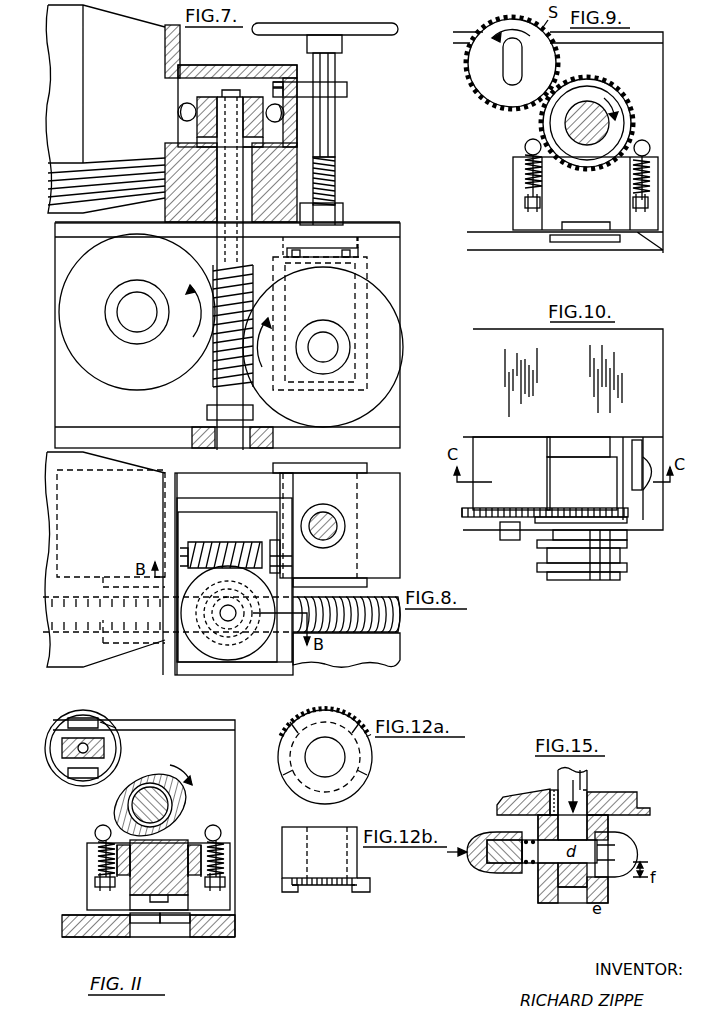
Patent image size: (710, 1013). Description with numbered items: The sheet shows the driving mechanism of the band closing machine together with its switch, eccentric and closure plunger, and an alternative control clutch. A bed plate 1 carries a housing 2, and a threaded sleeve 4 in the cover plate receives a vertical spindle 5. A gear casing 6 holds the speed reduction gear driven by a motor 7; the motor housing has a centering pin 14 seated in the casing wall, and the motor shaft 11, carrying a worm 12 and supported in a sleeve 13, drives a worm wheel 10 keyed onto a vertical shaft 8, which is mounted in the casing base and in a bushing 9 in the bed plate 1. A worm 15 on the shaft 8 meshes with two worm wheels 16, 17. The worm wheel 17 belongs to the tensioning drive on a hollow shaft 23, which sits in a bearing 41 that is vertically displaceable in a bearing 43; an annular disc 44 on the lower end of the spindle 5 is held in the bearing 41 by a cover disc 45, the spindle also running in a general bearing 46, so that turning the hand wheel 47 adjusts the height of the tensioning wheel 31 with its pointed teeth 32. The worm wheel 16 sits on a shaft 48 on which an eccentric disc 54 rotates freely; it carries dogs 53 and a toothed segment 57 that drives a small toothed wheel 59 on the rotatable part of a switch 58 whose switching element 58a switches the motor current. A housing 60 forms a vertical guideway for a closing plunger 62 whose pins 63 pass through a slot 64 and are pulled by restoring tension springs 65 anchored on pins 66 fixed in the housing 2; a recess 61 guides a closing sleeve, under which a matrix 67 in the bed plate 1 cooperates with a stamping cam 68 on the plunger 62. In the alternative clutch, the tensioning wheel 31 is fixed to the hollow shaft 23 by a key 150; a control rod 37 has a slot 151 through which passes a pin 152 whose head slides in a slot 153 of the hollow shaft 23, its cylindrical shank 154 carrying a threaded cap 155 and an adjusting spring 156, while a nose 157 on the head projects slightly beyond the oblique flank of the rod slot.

In FIG. 7, the bed plate 1 is at (387, 437).
In FIG. 7, the housing 2 is at (408, 407).
In FIG. 8, the housing 2 is at (390, 565).
In FIG. 9, the housing 2 is at (650, 88).
In FIG. 10, the housing 2 is at (648, 396).
In FIG. 11, the housing 2 is at (220, 750).
In FIG. 7, the threaded sleeve 4 is at (341, 216).
In FIG. 7, the vertical spindle 5 is at (335, 126).
In FIG. 8, the vertical spindle 5 is at (328, 512).
In FIG. 7, the gear casing 6 is at (176, 162).
In FIG. 8, the gear casing 6 is at (260, 655).
In FIG. 7, the motor 7 is at (118, 24).
In FIG. 8, the motor 7 is at (105, 559).
In FIG. 7, the vertical shaft 8 is at (233, 95).
In FIG. 7, the bushing 9 is at (207, 412).
In FIG. 7, the worm wheel 10 is at (205, 95).
In FIG. 8, the worm wheel 10 is at (228, 650).
In FIG. 7, the motor shaft 11 is at (180, 110).
In FIG. 8, the motor shaft 11 is at (184, 548).
In FIG. 8, the worm 12 is at (232, 542).
In FIG. 8, the sleeve 13 is at (276, 542).
In FIG. 7, the centering pin 14 is at (165, 122).
In FIG. 7, the worm 15 is at (213, 385).
In FIG. 7, the worm wheel 16 is at (112, 376).
In FIG. 8, the worm wheel 16 is at (85, 625).
In FIG. 7, the worm wheel 17 is at (387, 330).
In FIG. 15, the hollow shaft 23 is at (548, 900).
In FIG. 15, the tensioning wheel 31 is at (510, 801).
In FIG. 15, the pointed teeth 32 is at (497, 808).
In FIG. 7, the control rod 37 is at (329, 334).
In FIG. 15, the control rod 37 is at (580, 790).
In FIG. 7, the bearing 41 is at (352, 290).
In FIG. 7, the bearing 43 is at (358, 241).
In FIG. 7, the annular disc 44 is at (350, 288).
In FIG. 7, the cover disc 45 is at (360, 254).
In FIG. 7, the general bearing 46 is at (348, 92).
In FIG. 7, the hand wheel 47 is at (394, 26).
In FIG. 7, the shaft 48 is at (150, 293).
In FIG. 9, the shaft 48 is at (605, 133).
In FIG. 11, the shaft 48 is at (173, 800).
In FIG. 12a, the dogs 53 is at (362, 773).
In FIG. 12b, the dogs 53 is at (288, 892).
In FIG. 12b, the eccentric disc 54 is at (352, 860).
In FIG. 9, the toothed segment 57 is at (601, 76).
In FIG. 10, the toothed segment 57 is at (590, 512).
In FIG. 12a, the toothed segment 57 is at (345, 715).
In FIG. 12b, the toothed segment 57 is at (320, 888).
In FIG. 10, the switch 58 is at (517, 448).
In FIG. 11, the switch 58 is at (67, 728).
In FIG. 11, the switching element 58a is at (112, 728).
In FIG. 9, the small toothed wheel 59 is at (482, 25).
In FIG. 10, the small toothed wheel 59 is at (462, 512).
In FIG. 9, the housing 60 is at (552, 215).
In FIG. 10, the housing 60 is at (648, 447).
In FIG. 11, the housing 60 is at (92, 903).
In FIG. 9, the recess 61 is at (600, 230).
In FIG. 11, the closing plunger 62 is at (180, 843).
In FIG. 9, the pins 63 is at (525, 202).
In FIG. 11, the pins 63 is at (95, 882).
In FIG. 11, the slot 64 is at (195, 898).
In FIG. 9, the restoring tension spring 65 is at (525, 163).
In FIG. 10, the restoring tension spring 65 is at (563, 381).
In FIG. 11, the restoring tension spring 65 is at (98, 855).
In FIG. 9, the pins 66 is at (525, 146).
In FIG. 11, the pins 66 is at (95, 833).
In FIG. 11, the matrix 67 is at (138, 925).
In FIG. 11, the stamping cam 68 is at (178, 925).
In FIG. 15, the key 150 is at (550, 790).
In FIG. 15, the slot 151 is at (620, 845).
In FIG. 15, the pin 152 is at (658, 866).
In FIG. 15, the slot 153 is at (625, 852).
In FIG. 15, the cylindrical shank 154 is at (540, 893).
In FIG. 15, the threaded cap 155 is at (478, 871).
In FIG. 15, the adjusting spring 156 is at (526, 866).
In FIG. 15, the nose 157 is at (608, 881).